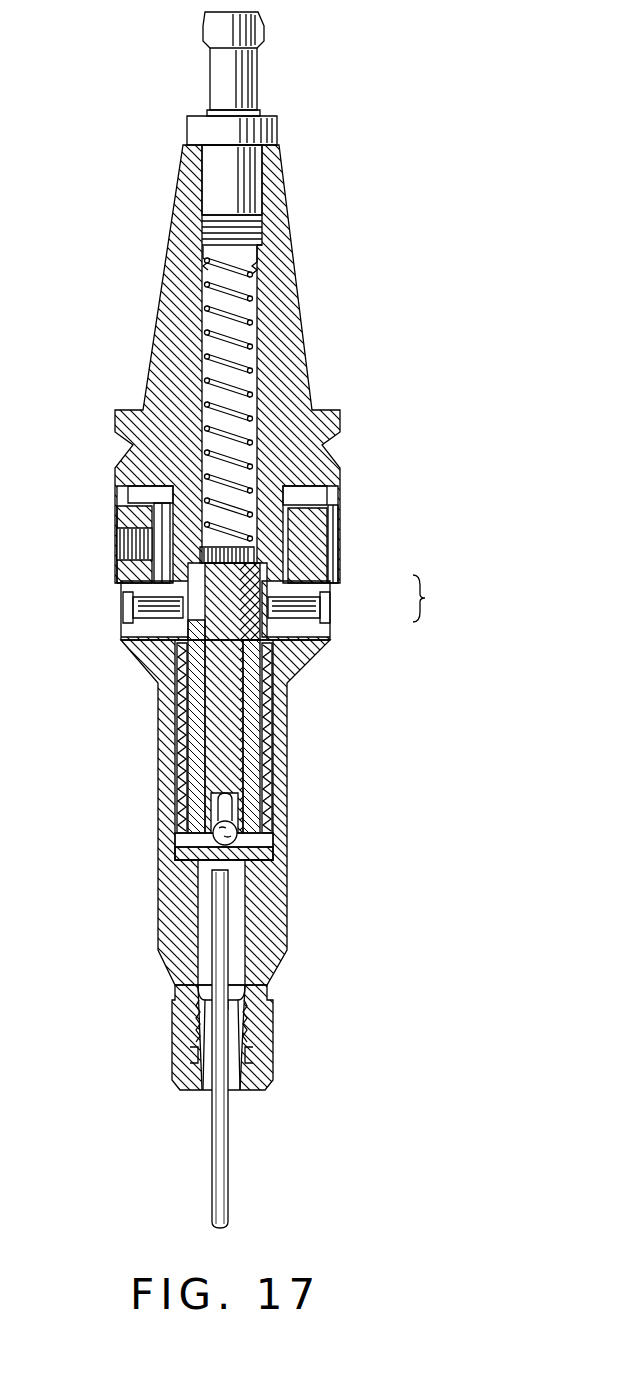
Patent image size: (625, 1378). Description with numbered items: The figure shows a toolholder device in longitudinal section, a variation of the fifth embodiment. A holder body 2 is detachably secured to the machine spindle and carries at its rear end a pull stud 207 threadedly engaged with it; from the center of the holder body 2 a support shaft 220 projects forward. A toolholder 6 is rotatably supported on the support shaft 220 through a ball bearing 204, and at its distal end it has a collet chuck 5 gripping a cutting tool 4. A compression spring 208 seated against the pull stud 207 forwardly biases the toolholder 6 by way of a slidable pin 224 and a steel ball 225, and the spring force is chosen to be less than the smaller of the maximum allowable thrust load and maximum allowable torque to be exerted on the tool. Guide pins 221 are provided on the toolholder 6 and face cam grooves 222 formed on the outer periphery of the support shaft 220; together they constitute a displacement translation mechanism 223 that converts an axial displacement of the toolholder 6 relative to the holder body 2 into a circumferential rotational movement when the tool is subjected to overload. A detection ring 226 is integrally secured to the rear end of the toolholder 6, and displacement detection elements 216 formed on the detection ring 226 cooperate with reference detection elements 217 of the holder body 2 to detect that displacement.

The holder body 2 is at (294, 247).
The pull stud 207 is at (257, 88).
The compression spring 208 is at (241, 309).
The reference detection elements 217 is at (118, 495).
The displacement detection elements 216 is at (117, 575).
The detection ring 226 is at (317, 522).
The cam grooves 222 is at (314, 582).
The guide pins 221 is at (148, 615).
The displacement translation mechanism 223 is at (451, 598).
The toolholder 6 is at (288, 800).
The ball bearing 204 is at (180, 712).
The support shaft 220 is at (254, 709).
The slidable pin 224 is at (234, 747).
The steel ball 225 is at (242, 840).
The collet chuck 5 is at (273, 1038).
The cutting tool 4 is at (229, 1192).